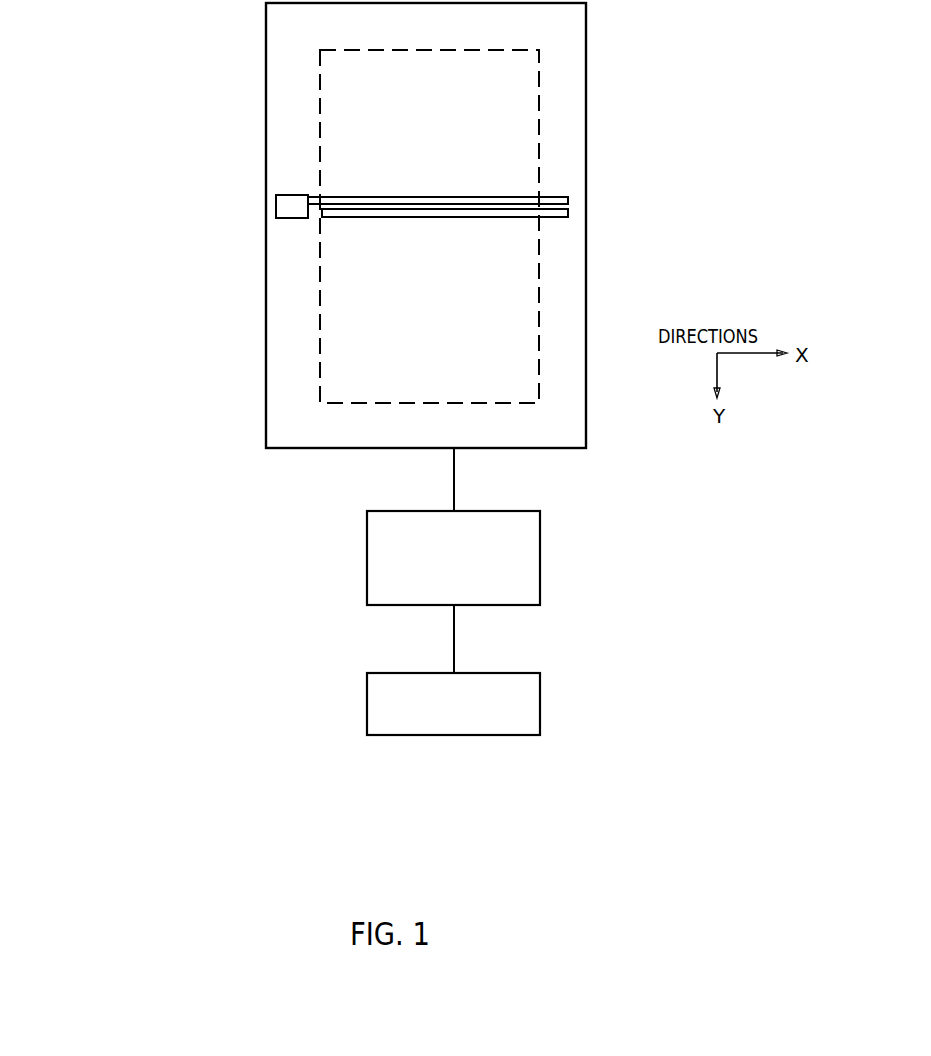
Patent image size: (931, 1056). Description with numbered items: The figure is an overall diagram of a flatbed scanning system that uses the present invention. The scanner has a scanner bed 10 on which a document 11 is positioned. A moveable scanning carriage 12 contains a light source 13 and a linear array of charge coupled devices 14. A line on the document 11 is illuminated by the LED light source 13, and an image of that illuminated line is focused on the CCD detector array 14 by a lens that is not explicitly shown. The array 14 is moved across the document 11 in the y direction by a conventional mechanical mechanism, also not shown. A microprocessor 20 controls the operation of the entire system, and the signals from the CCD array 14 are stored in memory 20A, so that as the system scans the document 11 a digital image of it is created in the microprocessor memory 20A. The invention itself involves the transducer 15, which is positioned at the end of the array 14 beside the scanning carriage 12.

The scanner bed 10 is at (575, 110).
The document 11 is at (533, 70).
The scanning carriage 12 is at (443, 222).
The light source 13 is at (340, 229).
The linear array of charge coupled devices 14 is at (552, 197).
The transducer 15 is at (292, 195).
The microprocessor 20 is at (540, 522).
The memory 20A is at (540, 687).